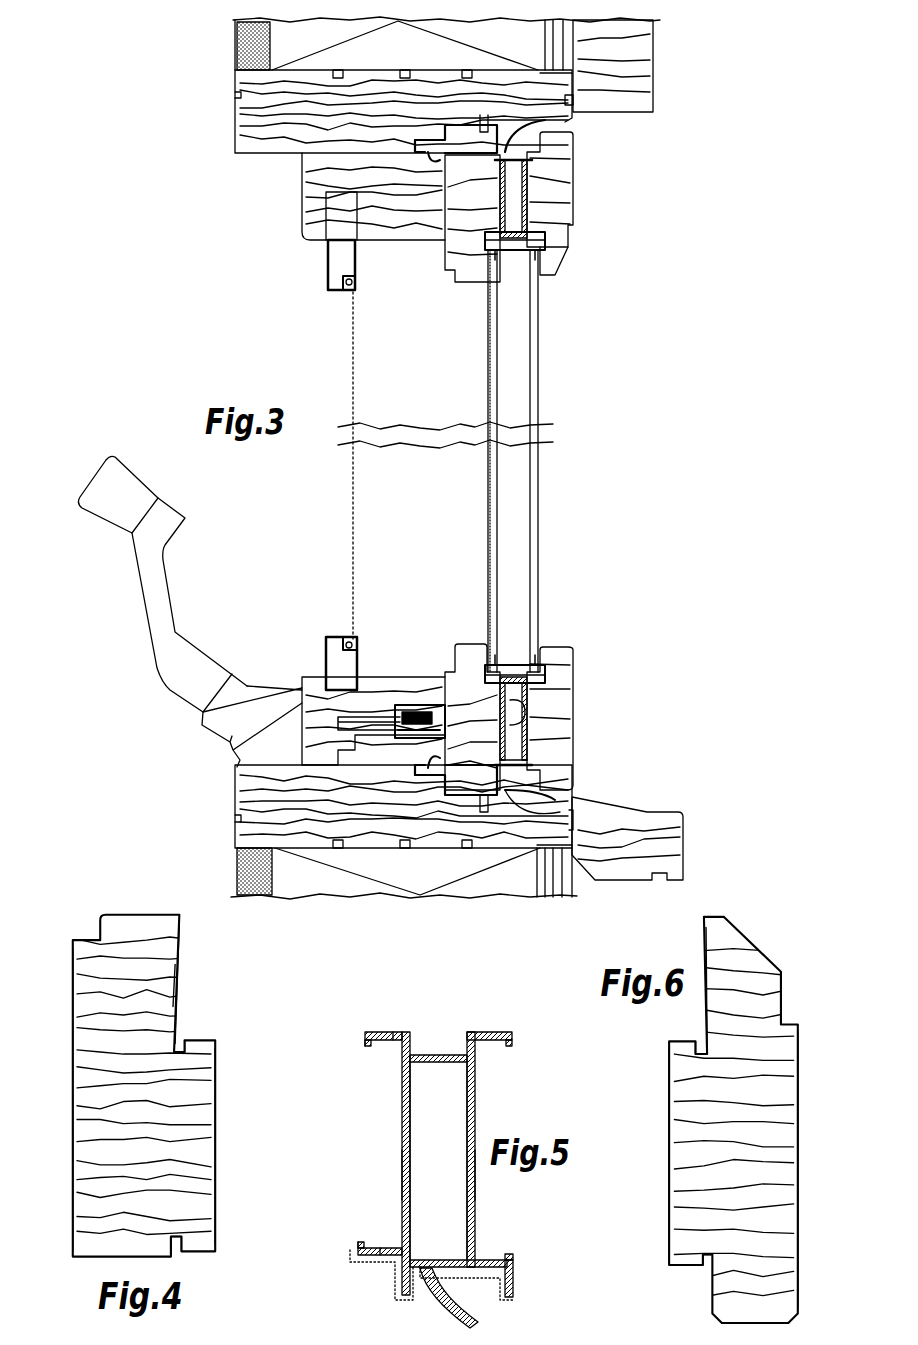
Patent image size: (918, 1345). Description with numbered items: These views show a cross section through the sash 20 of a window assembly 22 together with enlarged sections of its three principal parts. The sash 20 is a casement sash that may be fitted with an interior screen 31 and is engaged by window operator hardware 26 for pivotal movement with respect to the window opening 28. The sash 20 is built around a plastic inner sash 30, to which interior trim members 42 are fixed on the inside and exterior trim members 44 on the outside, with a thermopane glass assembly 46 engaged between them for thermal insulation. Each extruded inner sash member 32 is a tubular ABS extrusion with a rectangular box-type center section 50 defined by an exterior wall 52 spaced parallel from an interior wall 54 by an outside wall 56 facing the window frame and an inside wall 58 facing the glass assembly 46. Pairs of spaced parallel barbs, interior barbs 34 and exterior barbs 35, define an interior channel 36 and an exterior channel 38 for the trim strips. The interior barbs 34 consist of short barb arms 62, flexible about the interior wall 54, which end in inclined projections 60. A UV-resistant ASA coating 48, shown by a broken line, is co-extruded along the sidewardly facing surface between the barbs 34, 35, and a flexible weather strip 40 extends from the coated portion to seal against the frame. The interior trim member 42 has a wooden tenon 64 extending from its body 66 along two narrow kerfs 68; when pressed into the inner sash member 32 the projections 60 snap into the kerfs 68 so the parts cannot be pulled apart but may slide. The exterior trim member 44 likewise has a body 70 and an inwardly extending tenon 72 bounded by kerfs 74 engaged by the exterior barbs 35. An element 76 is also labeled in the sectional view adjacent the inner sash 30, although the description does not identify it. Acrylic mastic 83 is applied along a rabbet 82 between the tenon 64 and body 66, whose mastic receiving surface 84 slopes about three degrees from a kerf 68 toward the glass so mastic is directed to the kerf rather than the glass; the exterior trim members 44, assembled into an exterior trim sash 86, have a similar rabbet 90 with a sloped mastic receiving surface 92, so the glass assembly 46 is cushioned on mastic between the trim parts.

In FIG. 3, the sash 20 is at (525, 472).
In FIG. 3, the window assembly 22 is at (618, 143).
In FIG. 3, the window operator hardware 26 is at (148, 620).
In FIG. 3, the window opening 28 is at (565, 808).
In FIG. 3, the plastic inner sash 30 is at (560, 730).
In FIG. 3, the interior screen 31 is at (326, 643).
In FIG. 5, the inner sash member 32 is at (437, 1142).
In FIG. 5, the interior barb 34 is at (375, 1032).
In FIG. 5, the exterior barb 35 is at (495, 1032).
In FIG. 5, the interior channel 36 is at (393, 1045).
In FIG. 5, the exterior channel 38 is at (476, 1100).
In FIG. 3, the flexible weather strip 40 is at (505, 795).
In FIG. 5, the flexible weather strip 40 is at (478, 1315).
In FIG. 3, the interior trim member 42 is at (440, 278).
In FIG. 4, the interior trim member 42 is at (69, 1067).
In FIG. 3, the exterior trim member 44 is at (575, 188).
In FIG. 6, the exterior trim member 44 is at (796, 1064).
In FIG. 3, the thermopane glass assembly 46 is at (542, 392).
In FIG. 5, the coating 48 is at (390, 1280).
In FIG. 5, the center section 50 is at (412, 1150).
In FIG. 5, the exterior wall 52 is at (476, 1202).
In FIG. 5, the interior wall 54 is at (402, 1182).
In FIG. 5, the outside wall 56 is at (425, 1262).
In FIG. 5, the inside wall 58 is at (440, 1055).
In FIG. 5, the inclined projection 60 is at (368, 1042).
In FIG. 5, the barb arm 62 is at (393, 1032).
In FIG. 4, the tenon 64 is at (204, 1095).
In FIG. 4, the body 66 is at (69, 978).
In FIG. 4, the kerf 68 is at (172, 1040).
In FIG. 6, the body 70 is at (787, 1175).
In FIG. 6, the tenon 72 is at (665, 1138).
In FIG. 6, the kerf 74 is at (693, 1040).
In FIG. 3, the lock 76 is at (545, 693).
In FIG. 4, the rabbet 82 is at (170, 945).
In FIG. 3, the acrylic mastic 83 is at (445, 245).
In FIG. 4, the mastic receiving surface 84 is at (176, 973).
In FIG. 3, the exterior trim sash 86 is at (562, 270).
In FIG. 6, the rabbet 90 is at (700, 925).
In FIG. 6, the mastic receiving surface 92 is at (698, 952).